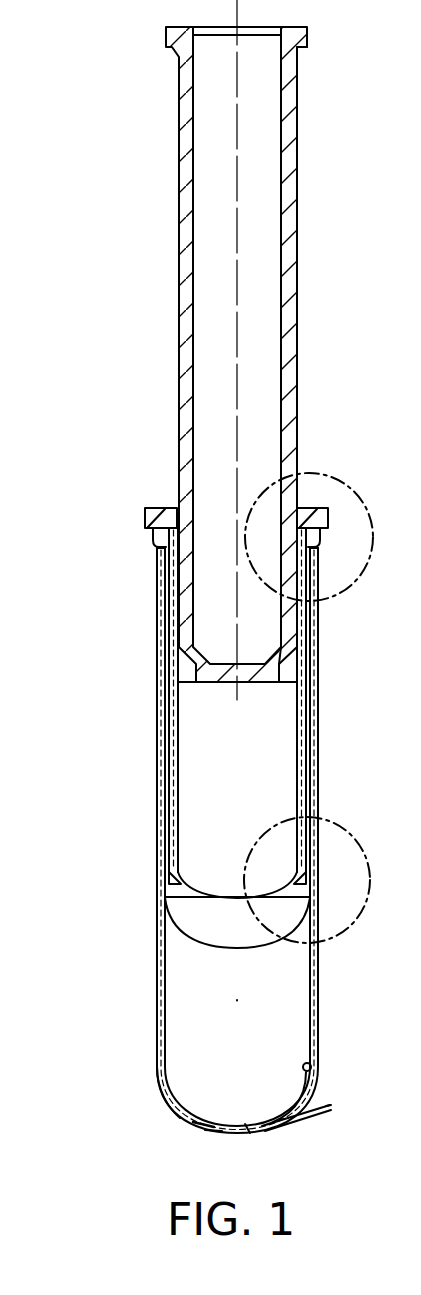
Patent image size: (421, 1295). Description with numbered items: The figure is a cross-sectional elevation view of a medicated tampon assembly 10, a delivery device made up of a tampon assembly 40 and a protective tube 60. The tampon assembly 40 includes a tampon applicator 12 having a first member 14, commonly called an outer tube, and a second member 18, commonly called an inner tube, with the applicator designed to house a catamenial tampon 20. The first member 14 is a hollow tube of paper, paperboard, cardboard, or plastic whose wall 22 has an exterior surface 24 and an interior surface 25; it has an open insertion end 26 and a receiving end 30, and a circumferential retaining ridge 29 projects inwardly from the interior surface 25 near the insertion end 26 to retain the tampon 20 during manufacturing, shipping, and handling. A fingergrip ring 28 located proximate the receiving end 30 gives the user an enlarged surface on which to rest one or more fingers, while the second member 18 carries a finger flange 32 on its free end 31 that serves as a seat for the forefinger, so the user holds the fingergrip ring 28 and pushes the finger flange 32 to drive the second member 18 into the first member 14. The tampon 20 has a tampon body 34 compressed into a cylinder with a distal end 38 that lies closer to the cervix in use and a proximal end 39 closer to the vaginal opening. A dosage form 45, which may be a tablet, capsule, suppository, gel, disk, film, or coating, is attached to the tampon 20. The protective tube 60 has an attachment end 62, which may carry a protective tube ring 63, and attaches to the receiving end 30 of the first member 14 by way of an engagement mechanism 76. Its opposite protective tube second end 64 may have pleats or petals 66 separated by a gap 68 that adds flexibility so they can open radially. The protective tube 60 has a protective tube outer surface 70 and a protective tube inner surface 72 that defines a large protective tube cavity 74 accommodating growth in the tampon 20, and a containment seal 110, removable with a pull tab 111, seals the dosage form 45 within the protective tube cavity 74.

The medicated tampon assembly 10 is at (78, 368).
The tampon applicator 12 is at (162, 354).
The first member 14 is at (170, 700).
The second member 18 is at (179, 182).
The tampon 20 is at (190, 758).
The wall 22 is at (172, 730).
The exterior surface 24 is at (176, 795).
The interior surface 25 is at (300, 638).
The insertion end 26 is at (170, 866).
The fingergrip ring 28 is at (172, 515).
The retaining ridge 29 is at (163, 884).
The receiving end 30 is at (160, 580).
The free end 31 is at (305, 28).
The finger flange 32 is at (307, 47).
The tampon body 34 is at (280, 756).
The distal end 38 is at (310, 881).
The proximal end 39 is at (290, 667).
The tampon assembly 40 is at (130, 499).
The dosage form 45 is at (205, 946).
The protective tube 60 is at (162, 819).
The attachment end 62 is at (152, 532).
The protective tube ring 63 is at (146, 514).
The protective tube second end 64 is at (162, 1084).
The petals 66 is at (193, 1118).
The gap 68 is at (250, 1129).
The protective tube outer surface 70 is at (310, 1040).
The protective tube inner surface 72 is at (312, 1068).
The protective tube cavity 74 is at (251, 1067).
The engagement mechanism 76 is at (150, 541).
The containment seal 110 is at (213, 1134).
The pull tab 111 is at (328, 1112).